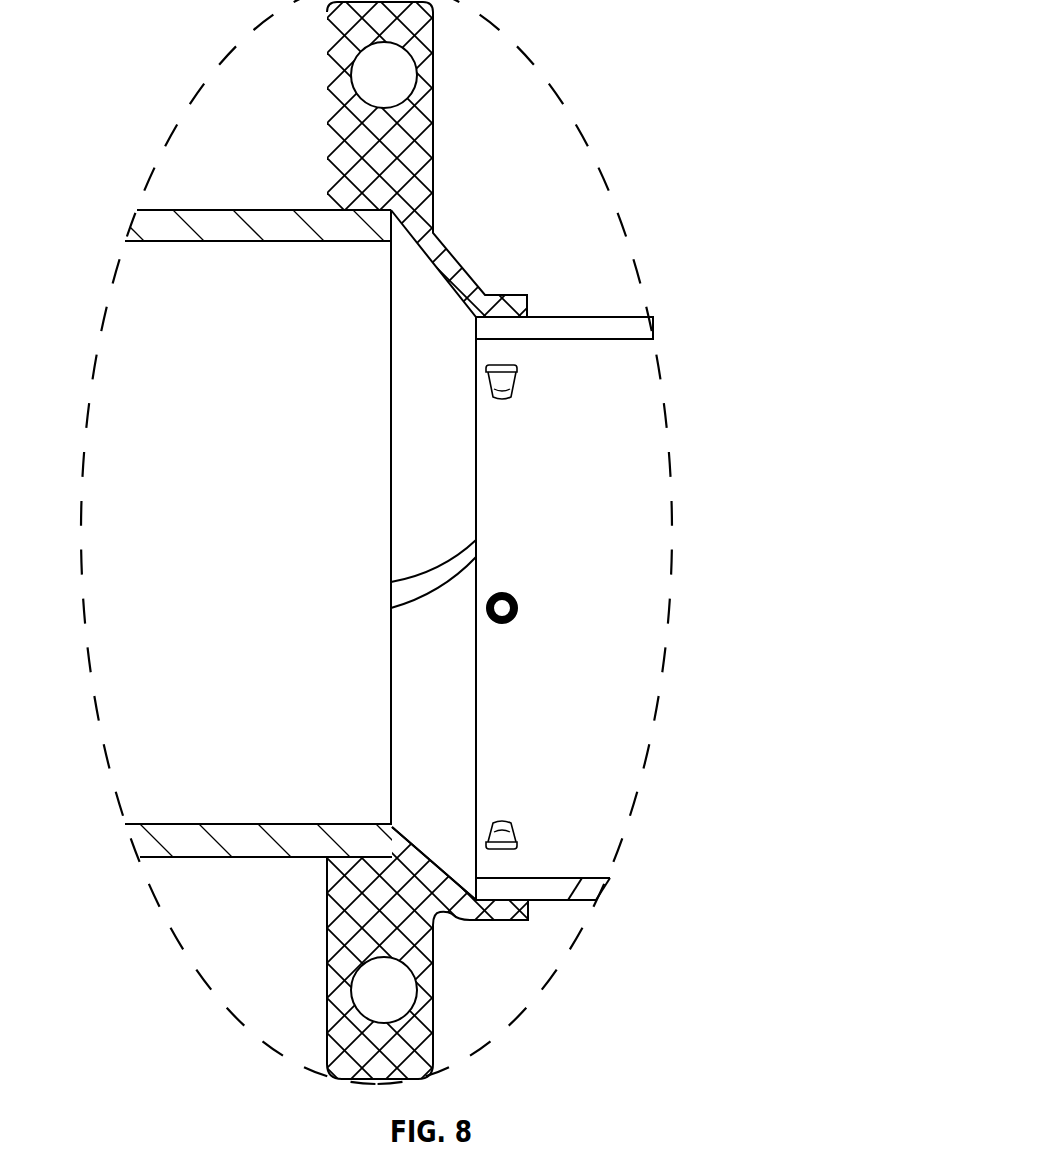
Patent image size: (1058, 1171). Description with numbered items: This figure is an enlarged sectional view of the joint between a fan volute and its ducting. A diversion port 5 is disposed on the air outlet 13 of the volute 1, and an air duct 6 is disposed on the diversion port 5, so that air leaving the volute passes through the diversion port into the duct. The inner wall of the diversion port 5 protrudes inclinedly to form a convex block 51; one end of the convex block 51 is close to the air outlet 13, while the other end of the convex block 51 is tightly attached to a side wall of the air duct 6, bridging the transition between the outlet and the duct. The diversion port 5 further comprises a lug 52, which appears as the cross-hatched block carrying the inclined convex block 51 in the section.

The volute 1 is at (592, 894).
The diversion port 5 is at (500, 920).
The air duct 6 is at (213, 842).
The air outlet 13 is at (473, 483).
The convex block 51 is at (442, 850).
The lug 52 is at (383, 167).